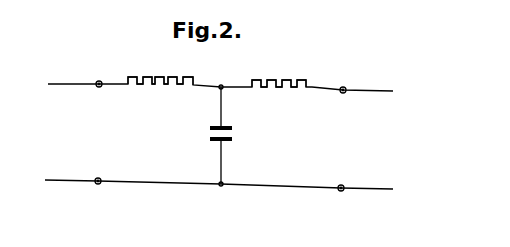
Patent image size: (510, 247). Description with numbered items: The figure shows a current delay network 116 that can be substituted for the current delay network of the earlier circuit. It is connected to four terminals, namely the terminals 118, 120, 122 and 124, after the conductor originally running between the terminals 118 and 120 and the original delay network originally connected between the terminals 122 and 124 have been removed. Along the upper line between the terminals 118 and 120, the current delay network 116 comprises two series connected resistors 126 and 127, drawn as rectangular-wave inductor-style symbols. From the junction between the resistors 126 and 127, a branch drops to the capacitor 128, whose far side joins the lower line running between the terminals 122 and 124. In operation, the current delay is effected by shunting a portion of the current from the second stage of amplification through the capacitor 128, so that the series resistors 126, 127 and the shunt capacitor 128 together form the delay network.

The current delay network 116 is at (413, 148).
The terminal 118 is at (103, 73).
The terminal 120 is at (342, 86).
The terminal 122 is at (98, 185).
The terminal 124 is at (343, 192).
The resistor 126 is at (158, 77).
The resistor 127 is at (268, 80).
The capacitor 128 is at (233, 136).